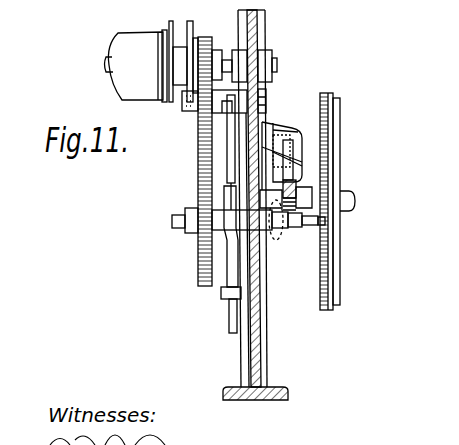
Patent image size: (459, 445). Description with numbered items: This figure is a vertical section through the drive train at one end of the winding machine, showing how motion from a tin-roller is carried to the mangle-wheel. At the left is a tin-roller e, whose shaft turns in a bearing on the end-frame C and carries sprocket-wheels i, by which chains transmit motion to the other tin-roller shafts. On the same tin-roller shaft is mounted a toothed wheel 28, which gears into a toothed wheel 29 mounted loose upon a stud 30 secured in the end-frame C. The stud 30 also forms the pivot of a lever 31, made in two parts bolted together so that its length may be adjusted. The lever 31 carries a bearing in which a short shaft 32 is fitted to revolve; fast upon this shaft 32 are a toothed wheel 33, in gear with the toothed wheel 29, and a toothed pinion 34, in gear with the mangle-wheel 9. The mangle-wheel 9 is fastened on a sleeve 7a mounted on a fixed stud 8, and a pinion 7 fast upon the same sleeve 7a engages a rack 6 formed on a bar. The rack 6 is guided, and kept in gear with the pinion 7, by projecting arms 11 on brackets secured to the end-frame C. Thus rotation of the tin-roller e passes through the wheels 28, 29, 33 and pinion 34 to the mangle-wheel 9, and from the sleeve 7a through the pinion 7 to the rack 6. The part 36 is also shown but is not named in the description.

The end-frame C is at (268, 373).
The tin-roller e is at (136, 66).
The sprocket-wheel i is at (171, 25).
The toothed wheel 28 is at (210, 37).
The toothed wheel 29 is at (211, 44).
The stud 30 is at (181, 108).
The pinion 7 is at (280, 233).
The rack 6 is at (285, 137).
The projecting arm 11 is at (293, 134).
The mangle-wheel 9 is at (341, 102).
The fixed stud 8 is at (356, 203).
The short shaft 32 is at (171, 222).
The toothed pinion 34 is at (326, 224).
The toothed wheel 33 is at (198, 273).
The sleeve 7a is at (307, 196).
The foot 36 is at (222, 301).
The lever 31 is at (231, 334).